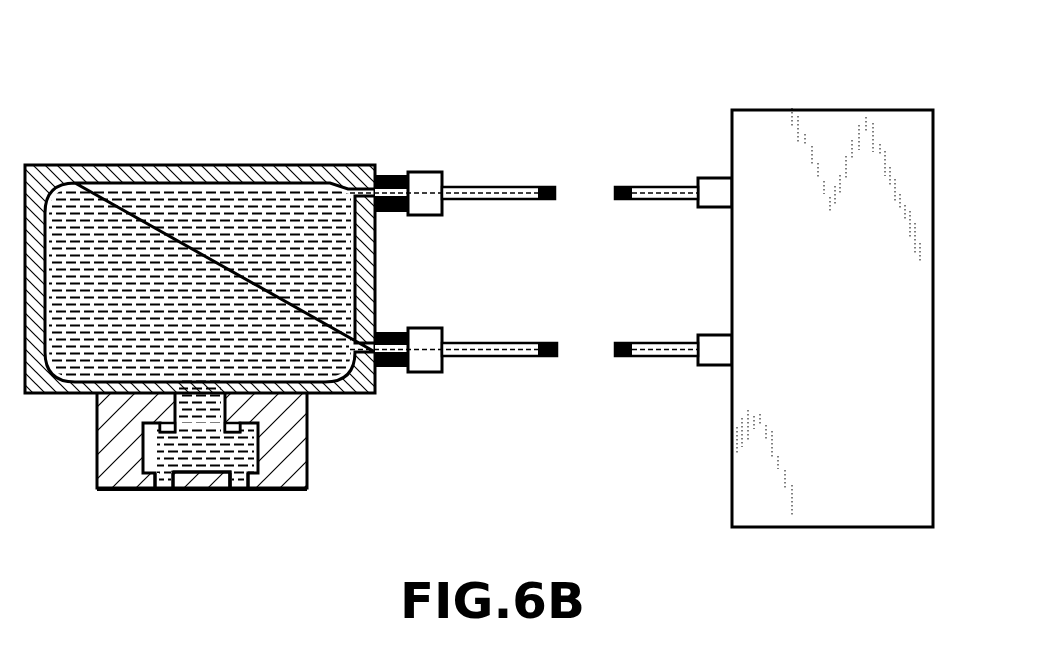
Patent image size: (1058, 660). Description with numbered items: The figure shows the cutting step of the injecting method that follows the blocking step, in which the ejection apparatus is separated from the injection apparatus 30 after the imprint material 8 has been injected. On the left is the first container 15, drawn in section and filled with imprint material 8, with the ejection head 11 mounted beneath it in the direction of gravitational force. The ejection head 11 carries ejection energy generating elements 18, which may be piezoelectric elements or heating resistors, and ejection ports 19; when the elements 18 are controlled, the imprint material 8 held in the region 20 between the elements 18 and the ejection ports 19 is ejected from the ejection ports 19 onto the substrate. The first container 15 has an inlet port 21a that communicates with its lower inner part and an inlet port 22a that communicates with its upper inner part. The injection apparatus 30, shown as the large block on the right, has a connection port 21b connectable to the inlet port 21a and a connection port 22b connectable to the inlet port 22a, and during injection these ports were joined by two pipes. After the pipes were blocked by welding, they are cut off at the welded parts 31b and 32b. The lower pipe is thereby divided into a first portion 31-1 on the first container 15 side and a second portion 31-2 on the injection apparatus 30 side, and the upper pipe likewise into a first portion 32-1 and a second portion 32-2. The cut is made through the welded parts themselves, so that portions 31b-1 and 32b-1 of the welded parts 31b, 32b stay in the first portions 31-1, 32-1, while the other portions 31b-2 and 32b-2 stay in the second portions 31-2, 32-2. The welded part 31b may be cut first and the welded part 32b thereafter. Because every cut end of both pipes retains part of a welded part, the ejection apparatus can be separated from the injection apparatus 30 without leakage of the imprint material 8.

The imprint material 8 is at (248, 237).
The ejection head 11 is at (97, 430).
The first container 15 is at (165, 165).
The ejection energy generating elements 18 is at (237, 425).
The ejection ports 19 is at (237, 490).
The region 20 is at (258, 453).
The inlet port 21a is at (422, 328).
The connection port 21b is at (712, 335).
The inlet port 22a is at (420, 172).
The connection port 22b is at (712, 178).
The injection apparatus 30 is at (777, 92).
The first portion of pipe 31 31-1 is at (470, 343).
The second portion of pipe 31 31-2 is at (677, 343).
The welded part 31b is at (668, 295).
The portion of welded part 31b 31b-1 is at (550, 343).
The other portion of welded part 31b 31b-2 is at (627, 343).
The first portion of pipe 32 32-1 is at (470, 187).
The second portion of pipe 32 32-2 is at (676, 187).
The welded part 32b is at (663, 135).
The portion of welded part 32b 32b-1 is at (546, 187).
The other portion of welded part 32b 32b-2 is at (624, 187).